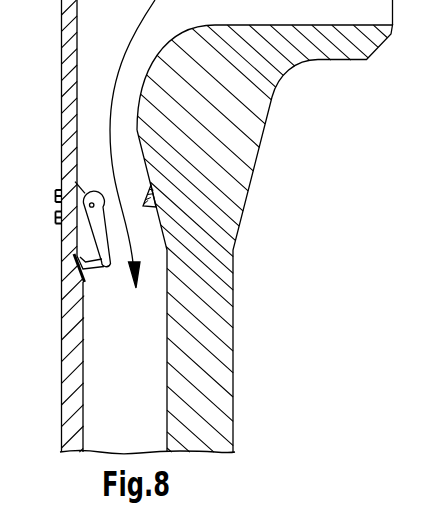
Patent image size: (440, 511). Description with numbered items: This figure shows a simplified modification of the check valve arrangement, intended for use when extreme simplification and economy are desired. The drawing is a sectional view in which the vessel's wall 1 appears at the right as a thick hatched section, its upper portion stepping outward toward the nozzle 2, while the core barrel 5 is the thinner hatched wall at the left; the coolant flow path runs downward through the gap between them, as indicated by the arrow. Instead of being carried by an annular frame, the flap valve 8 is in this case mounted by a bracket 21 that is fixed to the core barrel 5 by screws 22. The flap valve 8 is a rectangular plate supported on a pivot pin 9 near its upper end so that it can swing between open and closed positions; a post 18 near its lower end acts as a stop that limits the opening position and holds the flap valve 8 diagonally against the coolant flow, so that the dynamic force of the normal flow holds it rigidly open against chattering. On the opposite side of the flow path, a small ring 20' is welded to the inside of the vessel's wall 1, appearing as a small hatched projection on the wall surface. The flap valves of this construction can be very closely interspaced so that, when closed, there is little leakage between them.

The vessel's wall 1 is at (225, 300).
The nozzle 2 is at (366, 46).
The core barrel 5 is at (75, 334).
The flap valve 8 is at (102, 242).
The pivot pin 9 is at (92, 203).
The post 18 is at (88, 281).
The small ring 20' is at (137, 184).
The bracket 21 is at (83, 218).
The screw 22 is at (54, 217).